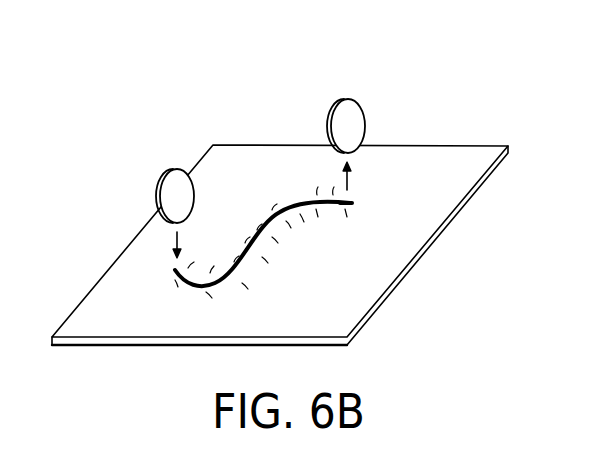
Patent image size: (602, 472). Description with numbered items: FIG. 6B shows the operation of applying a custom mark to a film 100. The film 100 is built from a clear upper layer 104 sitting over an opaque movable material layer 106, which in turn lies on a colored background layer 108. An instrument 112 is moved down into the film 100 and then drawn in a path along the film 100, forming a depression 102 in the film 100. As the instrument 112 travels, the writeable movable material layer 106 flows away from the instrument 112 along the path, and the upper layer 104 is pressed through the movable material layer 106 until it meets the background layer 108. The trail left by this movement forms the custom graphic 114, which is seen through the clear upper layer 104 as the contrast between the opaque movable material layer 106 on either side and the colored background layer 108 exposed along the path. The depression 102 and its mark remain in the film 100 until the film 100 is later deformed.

The film 100 is at (319, 209).
The depression 102 is at (279, 213).
The upper layer 104 is at (388, 150).
The movable material layer 106 is at (495, 170).
The background layer 108 is at (177, 272).
The instrument 112 is at (160, 180).
The custom graphic 114 is at (328, 203).